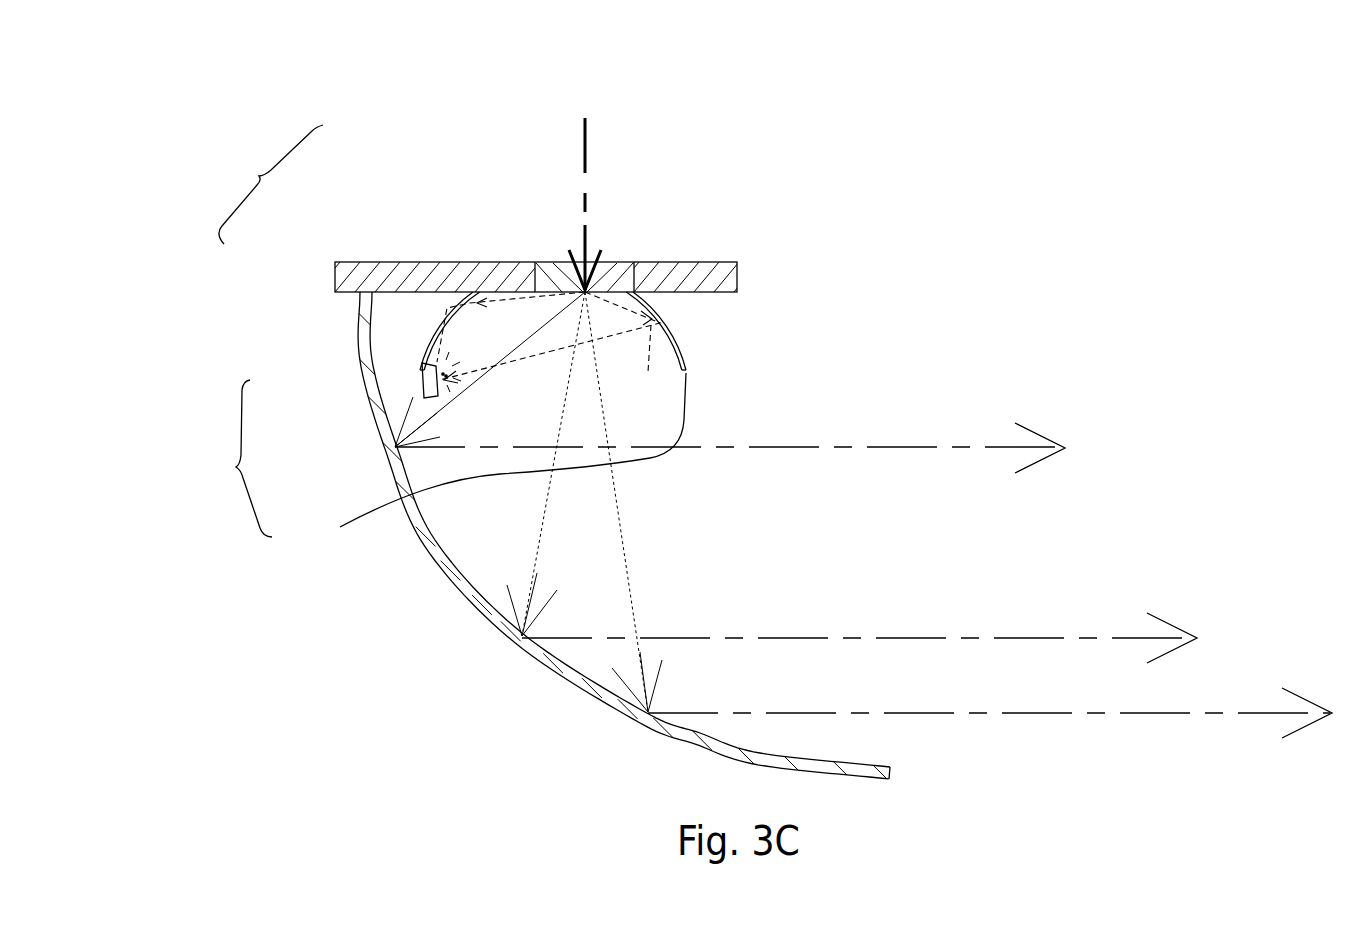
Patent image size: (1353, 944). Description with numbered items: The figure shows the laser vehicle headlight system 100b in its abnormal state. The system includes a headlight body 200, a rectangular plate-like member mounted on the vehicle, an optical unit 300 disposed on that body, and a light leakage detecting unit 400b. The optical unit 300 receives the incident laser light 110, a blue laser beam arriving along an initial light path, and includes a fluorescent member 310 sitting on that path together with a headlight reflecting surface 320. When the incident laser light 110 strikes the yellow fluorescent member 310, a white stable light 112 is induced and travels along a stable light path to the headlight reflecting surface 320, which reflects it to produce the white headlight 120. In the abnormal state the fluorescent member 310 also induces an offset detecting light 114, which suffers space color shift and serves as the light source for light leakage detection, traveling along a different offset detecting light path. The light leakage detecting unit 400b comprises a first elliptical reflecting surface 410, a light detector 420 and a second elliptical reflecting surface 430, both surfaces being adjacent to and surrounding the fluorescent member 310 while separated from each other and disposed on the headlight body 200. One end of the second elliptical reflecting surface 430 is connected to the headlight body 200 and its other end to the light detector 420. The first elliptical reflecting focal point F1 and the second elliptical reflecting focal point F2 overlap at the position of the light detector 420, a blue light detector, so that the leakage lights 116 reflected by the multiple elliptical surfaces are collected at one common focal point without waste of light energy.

The laser vehicle headlight system 100b is at (260, 78).
The incident laser light 110 is at (587, 147).
The stable light 112 is at (617, 525).
The offset detecting light 114 is at (672, 303).
The leakage lights 116 is at (646, 367).
The headlight 120 is at (1172, 712).
The headlight body 200 is at (739, 281).
The optical unit 300 is at (270, 184).
The fluorescent member 310 is at (545, 262).
The headlight reflecting surface 320 is at (360, 334).
The light leakage detecting unit 400b is at (220, 458).
The first elliptical reflecting surface 410 is at (485, 462).
The light detector 420 is at (410, 383).
The second elliptical reflecting surface 430 is at (422, 347).
The first elliptical reflecting focal point F1 is at (440, 385).
The second elliptical reflecting focal point F2 is at (511, 401).